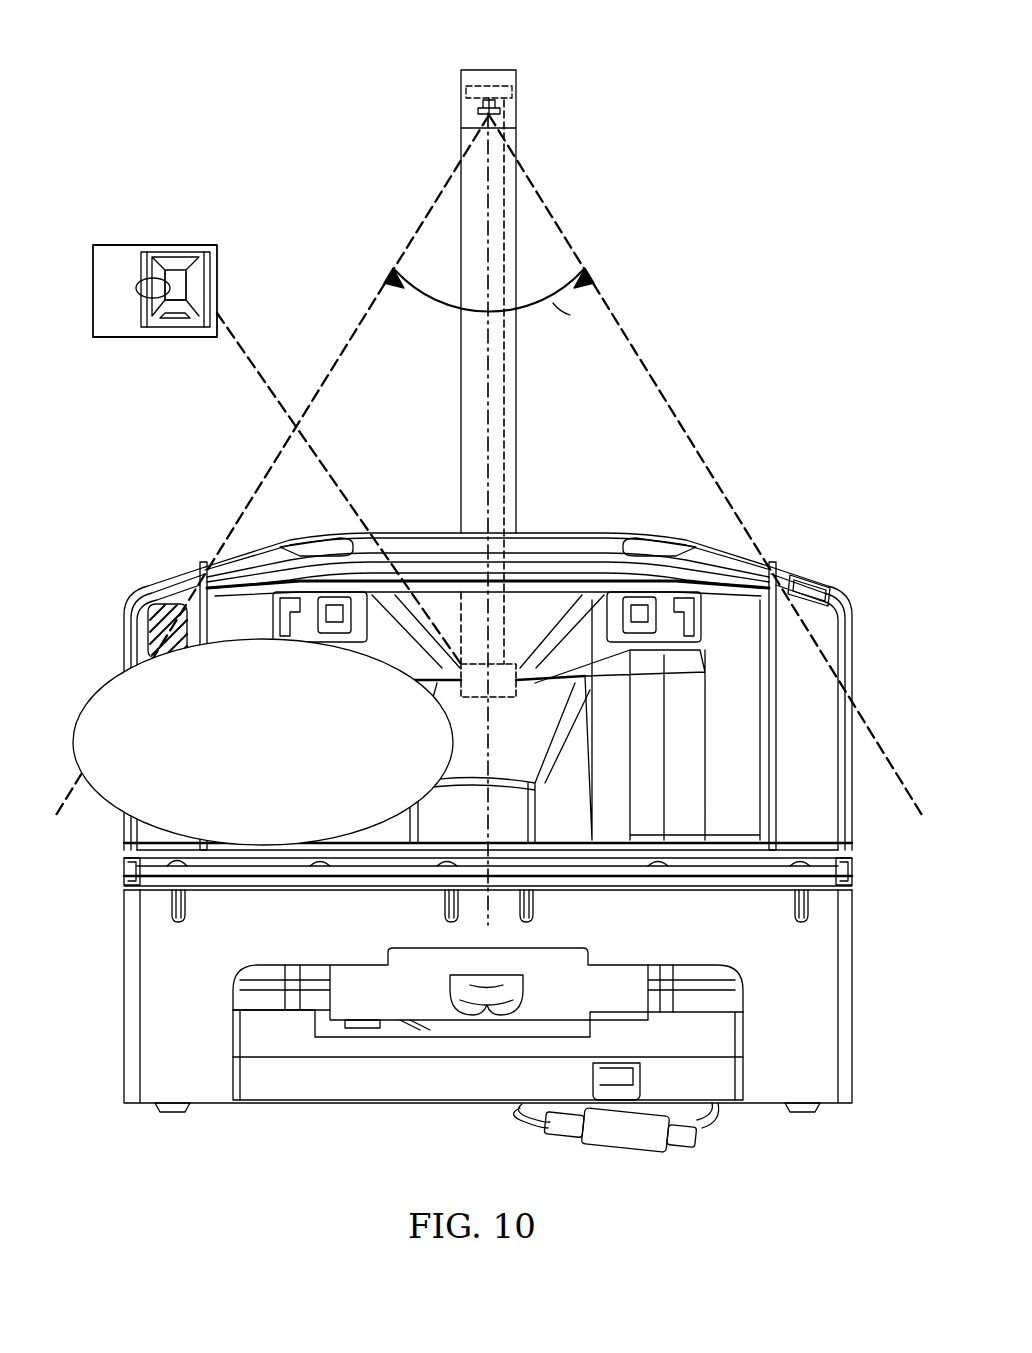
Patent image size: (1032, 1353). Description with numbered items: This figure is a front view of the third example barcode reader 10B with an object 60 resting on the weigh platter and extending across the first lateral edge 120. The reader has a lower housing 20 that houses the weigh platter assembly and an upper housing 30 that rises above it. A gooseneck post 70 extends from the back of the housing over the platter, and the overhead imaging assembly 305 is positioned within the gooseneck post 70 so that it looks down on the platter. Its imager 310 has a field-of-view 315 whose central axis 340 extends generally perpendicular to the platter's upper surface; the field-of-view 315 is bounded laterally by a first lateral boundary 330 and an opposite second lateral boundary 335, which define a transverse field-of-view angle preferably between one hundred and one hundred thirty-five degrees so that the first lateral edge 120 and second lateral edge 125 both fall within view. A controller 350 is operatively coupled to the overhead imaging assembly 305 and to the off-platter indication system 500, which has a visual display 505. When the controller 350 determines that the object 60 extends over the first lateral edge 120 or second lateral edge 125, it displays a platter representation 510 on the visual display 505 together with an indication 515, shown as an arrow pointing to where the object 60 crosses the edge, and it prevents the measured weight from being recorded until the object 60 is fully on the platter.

The barcode reader 10B is at (255, 66).
The overhead imaging assembly 305 is at (441, 80).
The gooseneck post 70 is at (441, 110).
The imager 310 is at (502, 104).
The central axis 340 is at (486, 373).
The field-of-view 315 is at (606, 389).
The first lateral boundary 330 is at (344, 348).
The second lateral boundary 335 is at (710, 462).
The off-platter indication system 500 is at (108, 228).
The visual display 505 is at (208, 248).
The platter representation 510 is at (193, 270).
The indication 515 is at (134, 281).
The upper housing 30 is at (177, 565).
The first lateral edge 120 is at (125, 862).
The second lateral edge 125 is at (853, 878).
The lower housing 20 is at (120, 1020).
The controller 350 is at (507, 699).
The object 60 is at (99, 690).